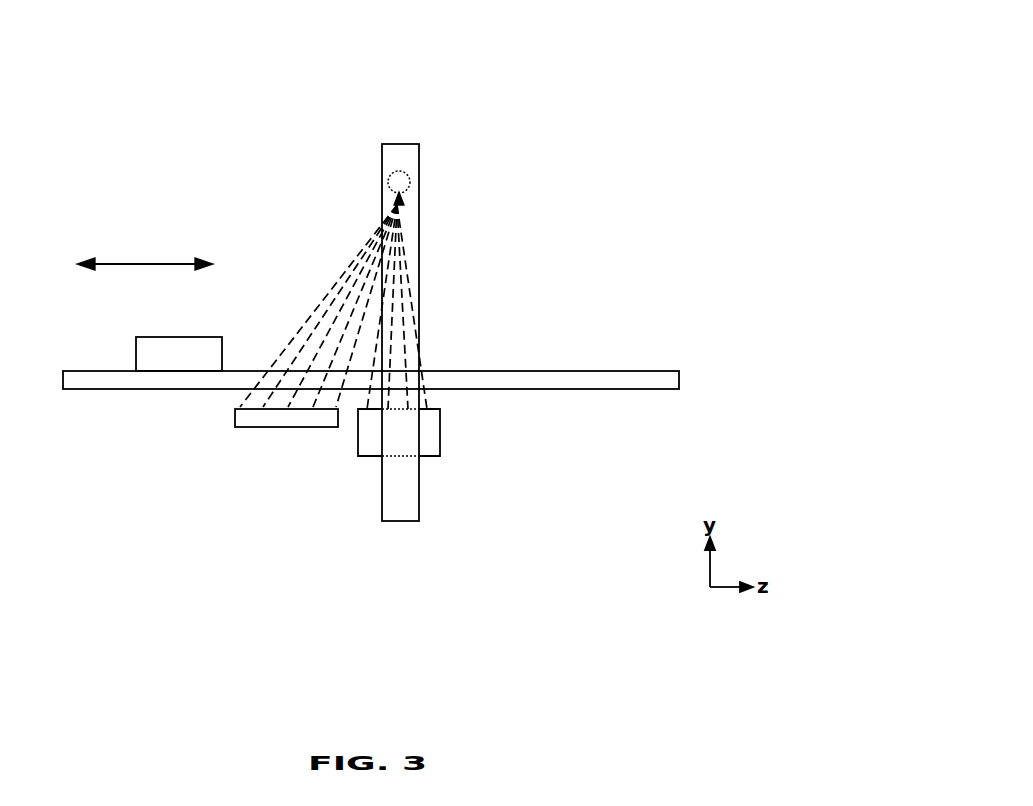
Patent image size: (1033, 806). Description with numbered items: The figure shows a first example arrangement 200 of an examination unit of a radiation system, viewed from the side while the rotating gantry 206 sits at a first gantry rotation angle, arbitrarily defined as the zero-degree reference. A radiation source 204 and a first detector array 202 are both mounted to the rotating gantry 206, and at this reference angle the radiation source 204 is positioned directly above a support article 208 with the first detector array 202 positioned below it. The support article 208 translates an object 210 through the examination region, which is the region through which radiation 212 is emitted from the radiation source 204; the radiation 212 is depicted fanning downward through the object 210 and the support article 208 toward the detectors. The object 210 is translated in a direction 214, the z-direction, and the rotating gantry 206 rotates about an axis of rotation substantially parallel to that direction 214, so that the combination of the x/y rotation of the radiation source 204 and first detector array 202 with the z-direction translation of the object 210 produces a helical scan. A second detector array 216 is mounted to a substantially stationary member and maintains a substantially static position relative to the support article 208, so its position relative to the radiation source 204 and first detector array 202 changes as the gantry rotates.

The first example arrangement 200 is at (650, 69).
The first detector array 202 is at (433, 427).
The radiation source 204 is at (434, 177).
The rotating gantry 206 is at (365, 324).
The support article 208 is at (371, 363).
The object 210 is at (191, 339).
The radiation 212 is at (354, 254).
The direction 214 is at (146, 247).
The second detector array 216 is at (282, 433).